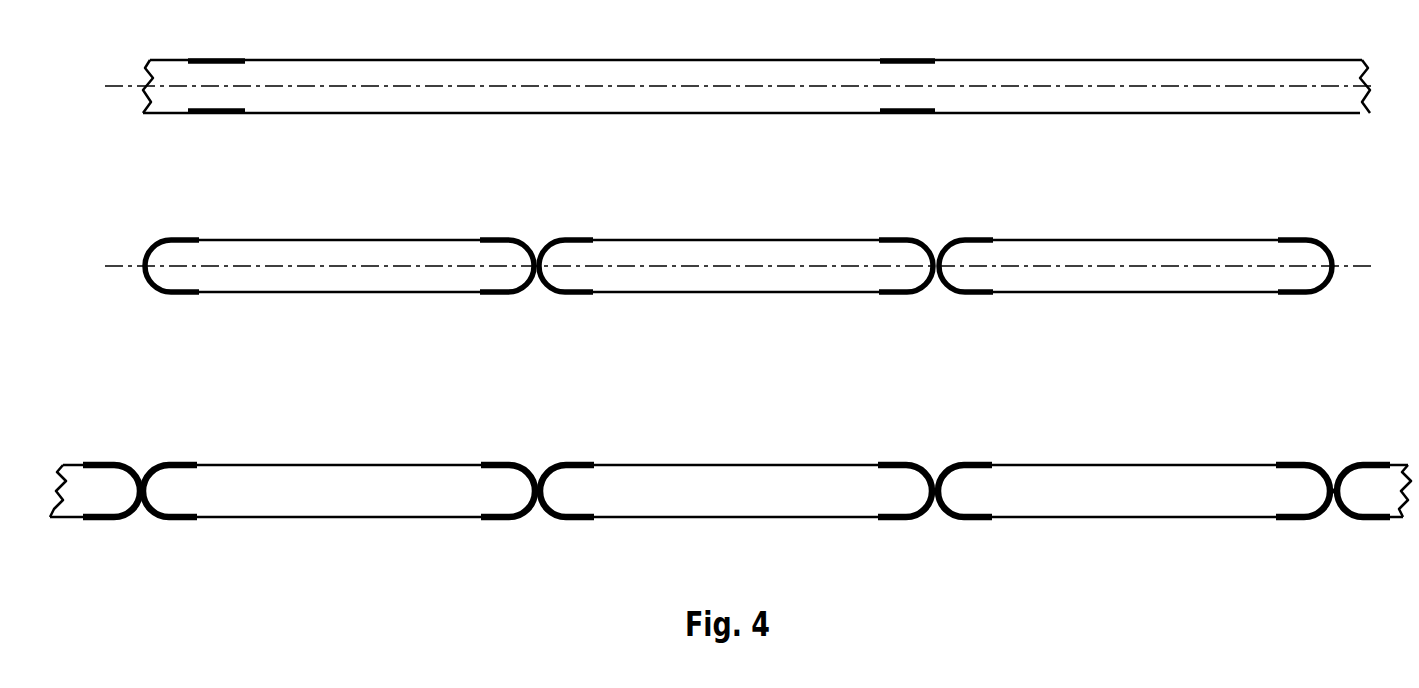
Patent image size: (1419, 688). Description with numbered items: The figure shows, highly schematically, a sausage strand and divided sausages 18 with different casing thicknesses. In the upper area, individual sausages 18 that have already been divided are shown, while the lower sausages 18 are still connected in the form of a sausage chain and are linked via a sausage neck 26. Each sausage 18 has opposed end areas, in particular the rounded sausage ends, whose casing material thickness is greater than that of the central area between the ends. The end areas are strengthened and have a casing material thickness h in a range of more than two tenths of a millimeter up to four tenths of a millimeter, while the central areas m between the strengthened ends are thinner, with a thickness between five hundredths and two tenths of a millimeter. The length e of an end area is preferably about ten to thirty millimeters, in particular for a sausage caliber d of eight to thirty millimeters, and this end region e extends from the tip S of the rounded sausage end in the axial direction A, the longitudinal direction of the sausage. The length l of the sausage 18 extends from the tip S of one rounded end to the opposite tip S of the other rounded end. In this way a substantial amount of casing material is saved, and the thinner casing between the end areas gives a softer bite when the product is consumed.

The sausage 18 is at (283, 239).
The sausage neck 26 is at (538, 487).
The tip of the rounded sausage end S is at (145, 263).
The axial direction A is at (738, 267).
The casing material thickness of end area h is at (220, 97).
The central area casing thickness m is at (357, 97).
The length of end area e is at (198, 237).
The length of the sausage l is at (145, 237).
The sausage caliber d is at (1136, 292).